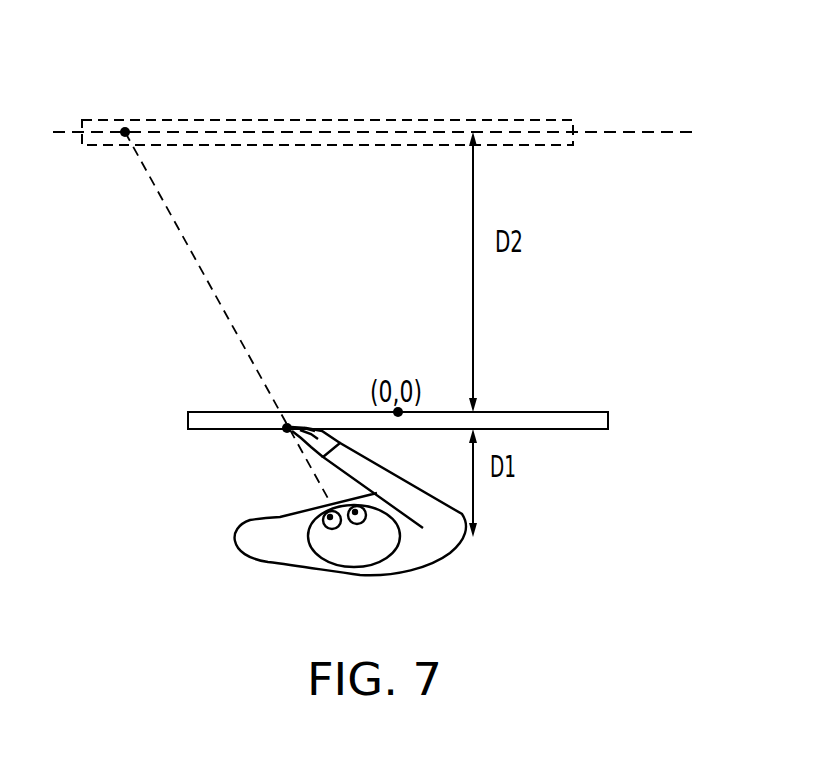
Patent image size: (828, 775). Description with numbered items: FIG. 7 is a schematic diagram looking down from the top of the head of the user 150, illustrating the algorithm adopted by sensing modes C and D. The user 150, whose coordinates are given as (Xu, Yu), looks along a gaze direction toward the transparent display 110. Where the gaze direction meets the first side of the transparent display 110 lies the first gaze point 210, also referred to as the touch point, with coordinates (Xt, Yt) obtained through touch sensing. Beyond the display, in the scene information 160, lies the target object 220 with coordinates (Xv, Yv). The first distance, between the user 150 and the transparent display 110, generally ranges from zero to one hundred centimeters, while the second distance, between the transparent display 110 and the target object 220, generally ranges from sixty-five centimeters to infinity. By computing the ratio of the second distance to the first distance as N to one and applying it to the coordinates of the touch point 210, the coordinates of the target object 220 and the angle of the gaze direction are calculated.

The transparent display 110 is at (598, 423).
The user 150 is at (438, 553).
The scene information 160 is at (520, 120).
The first gaze point 210 is at (285, 429).
The target object 220 is at (125, 130).